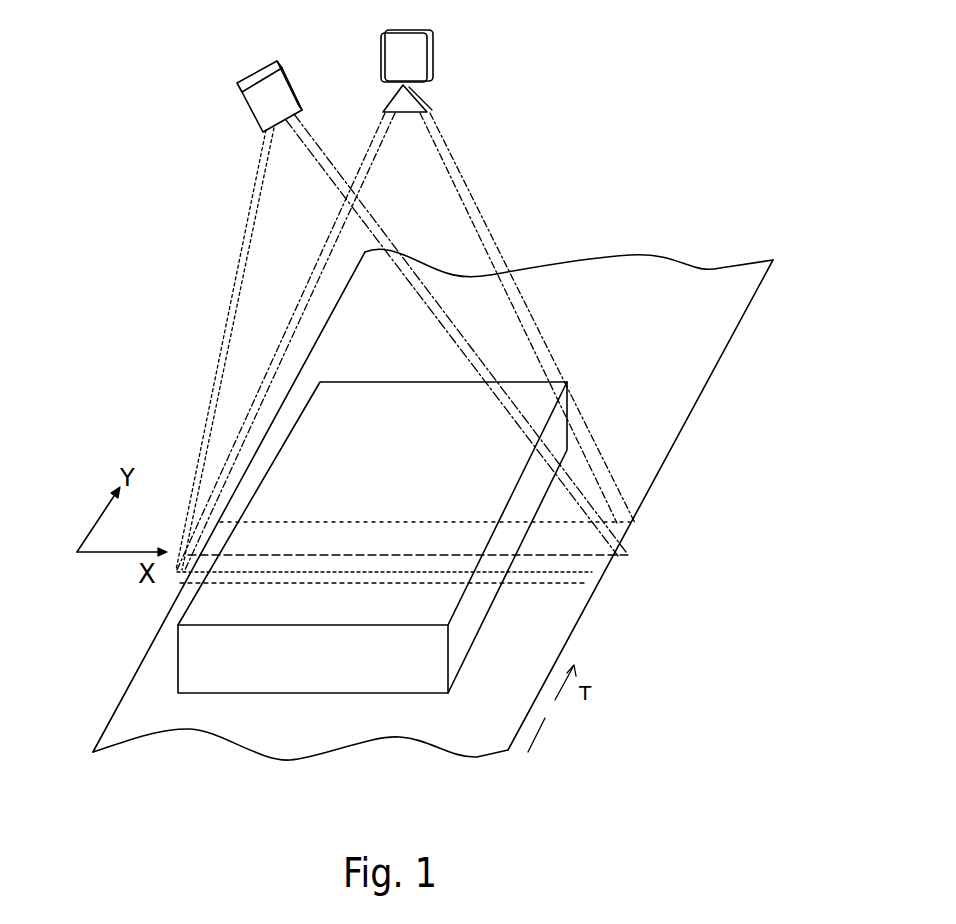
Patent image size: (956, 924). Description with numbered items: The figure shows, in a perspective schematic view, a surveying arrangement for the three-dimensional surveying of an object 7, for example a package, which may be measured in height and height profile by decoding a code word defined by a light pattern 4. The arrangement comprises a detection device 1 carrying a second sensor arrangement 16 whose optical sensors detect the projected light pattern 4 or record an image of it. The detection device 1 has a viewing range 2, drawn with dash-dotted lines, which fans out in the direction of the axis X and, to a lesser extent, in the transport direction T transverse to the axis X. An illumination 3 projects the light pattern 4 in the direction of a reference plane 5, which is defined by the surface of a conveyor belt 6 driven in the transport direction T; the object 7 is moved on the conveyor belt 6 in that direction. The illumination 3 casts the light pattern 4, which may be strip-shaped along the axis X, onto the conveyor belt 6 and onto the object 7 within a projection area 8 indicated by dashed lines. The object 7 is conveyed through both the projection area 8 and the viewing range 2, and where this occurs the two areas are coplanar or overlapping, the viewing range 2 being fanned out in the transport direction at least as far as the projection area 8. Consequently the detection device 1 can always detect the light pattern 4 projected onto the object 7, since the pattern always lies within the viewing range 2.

The detection device 1 is at (469, 71).
The second sensor arrangement 16 is at (415, 58).
The viewing range 2 is at (483, 213).
The illumination 3 is at (262, 101).
The light pattern 4 is at (620, 562).
The reference plane 5 is at (695, 303).
The conveyor belt 6 is at (720, 362).
The object 7 is at (349, 672).
The projection area 8 is at (250, 226).